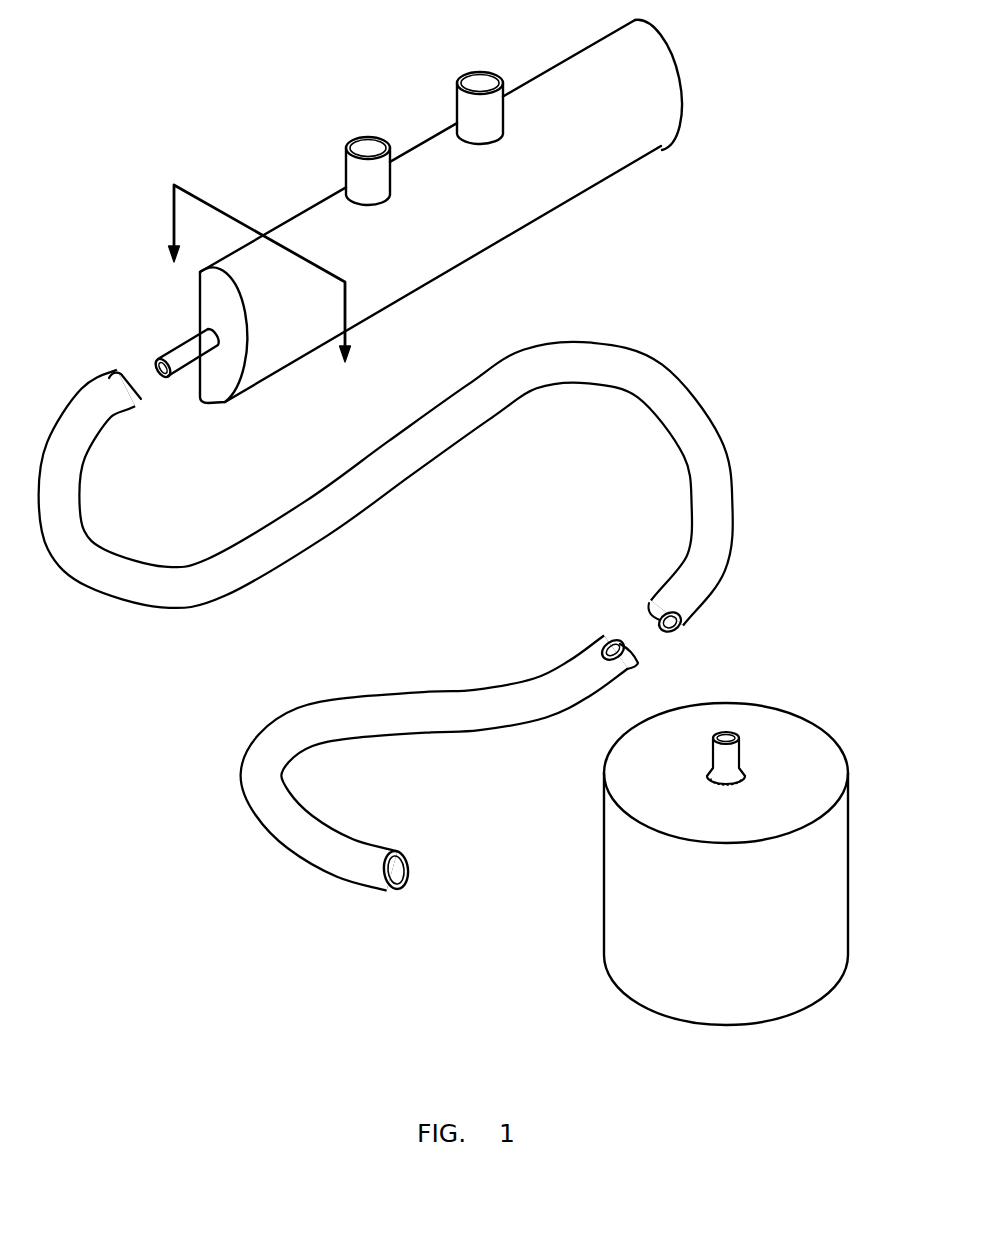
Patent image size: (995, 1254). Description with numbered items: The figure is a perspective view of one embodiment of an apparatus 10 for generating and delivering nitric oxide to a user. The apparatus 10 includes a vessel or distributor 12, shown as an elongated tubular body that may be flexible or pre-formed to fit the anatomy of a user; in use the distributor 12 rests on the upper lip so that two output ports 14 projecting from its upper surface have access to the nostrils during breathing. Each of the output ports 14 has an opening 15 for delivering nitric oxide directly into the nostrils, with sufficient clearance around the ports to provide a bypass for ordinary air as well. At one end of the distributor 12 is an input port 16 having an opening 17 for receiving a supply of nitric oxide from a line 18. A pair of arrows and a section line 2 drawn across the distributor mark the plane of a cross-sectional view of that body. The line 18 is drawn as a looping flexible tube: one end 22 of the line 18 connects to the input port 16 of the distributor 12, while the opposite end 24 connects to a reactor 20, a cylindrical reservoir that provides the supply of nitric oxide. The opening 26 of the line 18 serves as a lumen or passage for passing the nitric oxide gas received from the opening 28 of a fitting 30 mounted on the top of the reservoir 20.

The apparatus 10 is at (238, 62).
The distributor 12 is at (480, 209).
The output ports 14 is at (350, 170).
The opening 15 is at (365, 146).
The input port 16 is at (192, 347).
The opening 17 is at (160, 362).
The line 18 is at (200, 587).
The reactor 20 is at (617, 937).
The end of line 22 is at (130, 398).
The opposite end of line 24 is at (409, 863).
The opening of line 26 is at (404, 876).
The opening of fitting 28 is at (726, 738).
The fitting 30 is at (735, 758).
The section line for FIG. 2 is at (259, 287).